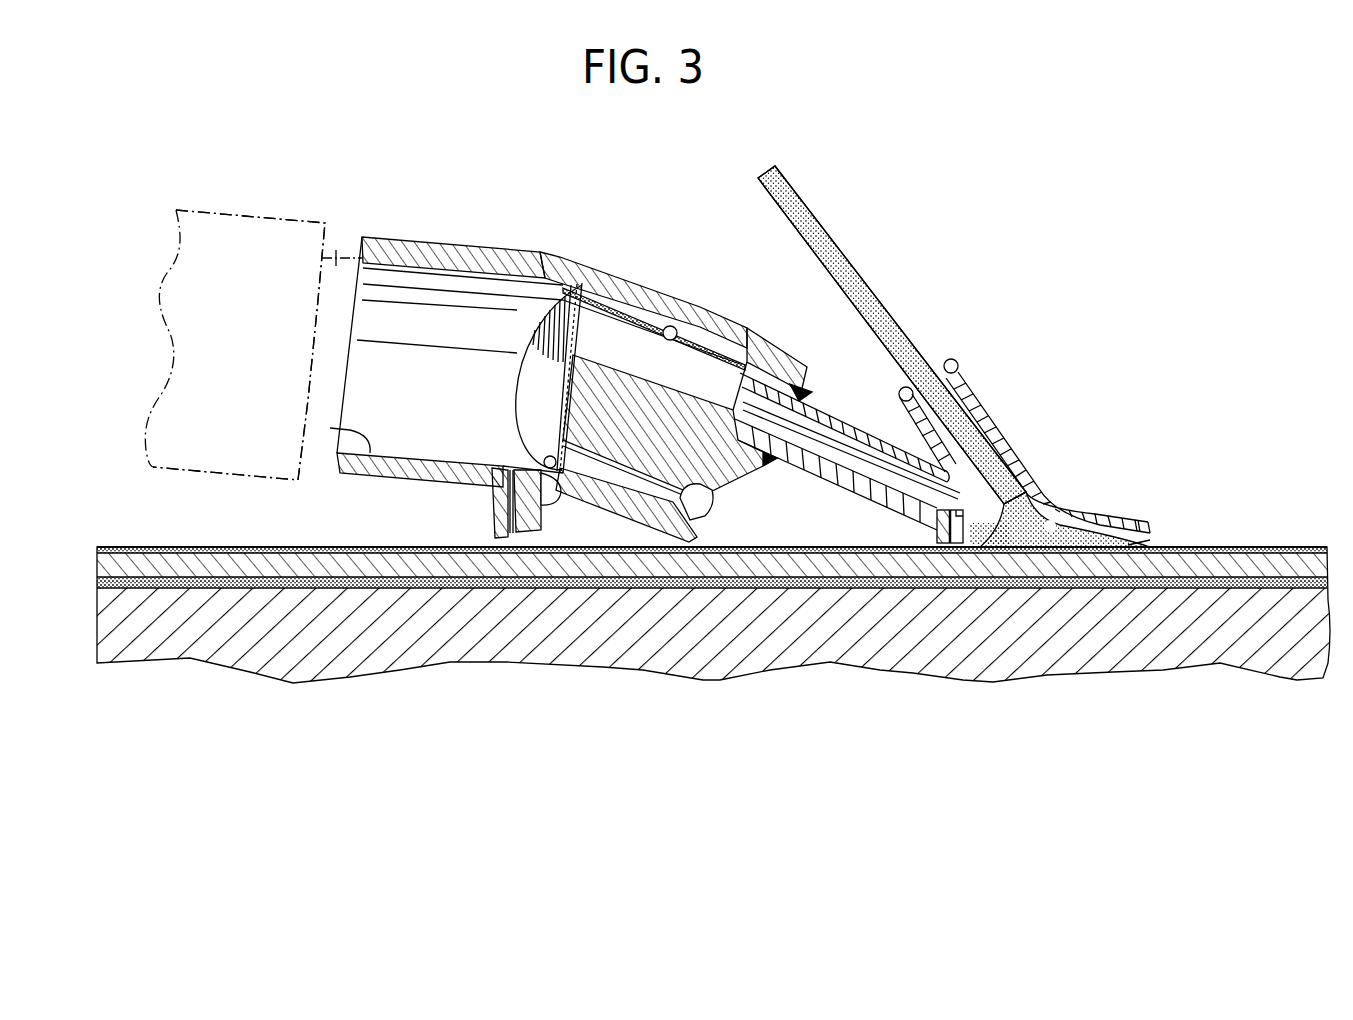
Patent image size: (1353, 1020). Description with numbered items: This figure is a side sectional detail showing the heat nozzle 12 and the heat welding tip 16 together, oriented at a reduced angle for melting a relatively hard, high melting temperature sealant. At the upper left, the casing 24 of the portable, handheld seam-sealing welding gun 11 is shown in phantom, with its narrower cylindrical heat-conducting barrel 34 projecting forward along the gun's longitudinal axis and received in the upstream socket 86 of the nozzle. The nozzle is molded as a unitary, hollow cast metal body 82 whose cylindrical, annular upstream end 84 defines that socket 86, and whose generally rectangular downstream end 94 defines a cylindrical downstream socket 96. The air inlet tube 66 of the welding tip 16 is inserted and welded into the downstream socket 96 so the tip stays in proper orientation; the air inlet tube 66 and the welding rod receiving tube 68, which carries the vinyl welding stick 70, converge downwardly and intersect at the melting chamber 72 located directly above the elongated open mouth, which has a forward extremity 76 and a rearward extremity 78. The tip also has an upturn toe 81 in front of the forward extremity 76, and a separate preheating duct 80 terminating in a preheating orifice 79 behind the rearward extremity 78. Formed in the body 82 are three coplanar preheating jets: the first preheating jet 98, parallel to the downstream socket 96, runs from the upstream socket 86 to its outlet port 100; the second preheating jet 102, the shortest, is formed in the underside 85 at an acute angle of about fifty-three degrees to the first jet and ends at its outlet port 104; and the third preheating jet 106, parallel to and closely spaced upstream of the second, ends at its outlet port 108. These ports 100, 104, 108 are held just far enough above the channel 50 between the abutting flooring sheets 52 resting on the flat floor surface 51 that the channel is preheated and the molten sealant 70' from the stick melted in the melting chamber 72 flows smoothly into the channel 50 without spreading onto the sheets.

The seam-sealing welding gun 11 is at (247, 202).
The casing 24 is at (223, 214).
The heat-conducting barrel 34 is at (337, 262).
The upstream end 84 is at (405, 236).
The metal body 82 is at (510, 243).
The heat nozzle 12 is at (536, 405).
The downstream socket 96 is at (676, 328).
The downstream end 94 is at (740, 330).
The welding stick 70 is at (892, 335).
The air inlet tube 66 is at (860, 423).
The welding rod receiving tube 68 is at (972, 403).
The heat welding tip 16 is at (1051, 389).
The melting chamber 72 is at (1050, 526).
The upturn toe 81 is at (1138, 520).
The molten sealant 70' is at (712, 510).
The forward extremity 76 is at (1140, 538).
The preheating duct 80 is at (937, 520).
The preheating orifice 79 is at (933, 532).
The rearward extremity 78 is at (980, 553).
The first preheating jet 98 is at (703, 504).
The outlet port 100 is at (704, 522).
The outlet port 104 is at (557, 508).
The outlet port 108 is at (522, 540).
The second preheating jet 102 is at (540, 462).
The third preheating jet 106 is at (508, 468).
The upstream socket 86 is at (336, 450).
The underside 85 is at (440, 488).
The channel 50 is at (258, 546).
The floor surface 51 is at (713, 578).
The sheet of flooring 52 is at (147, 546).